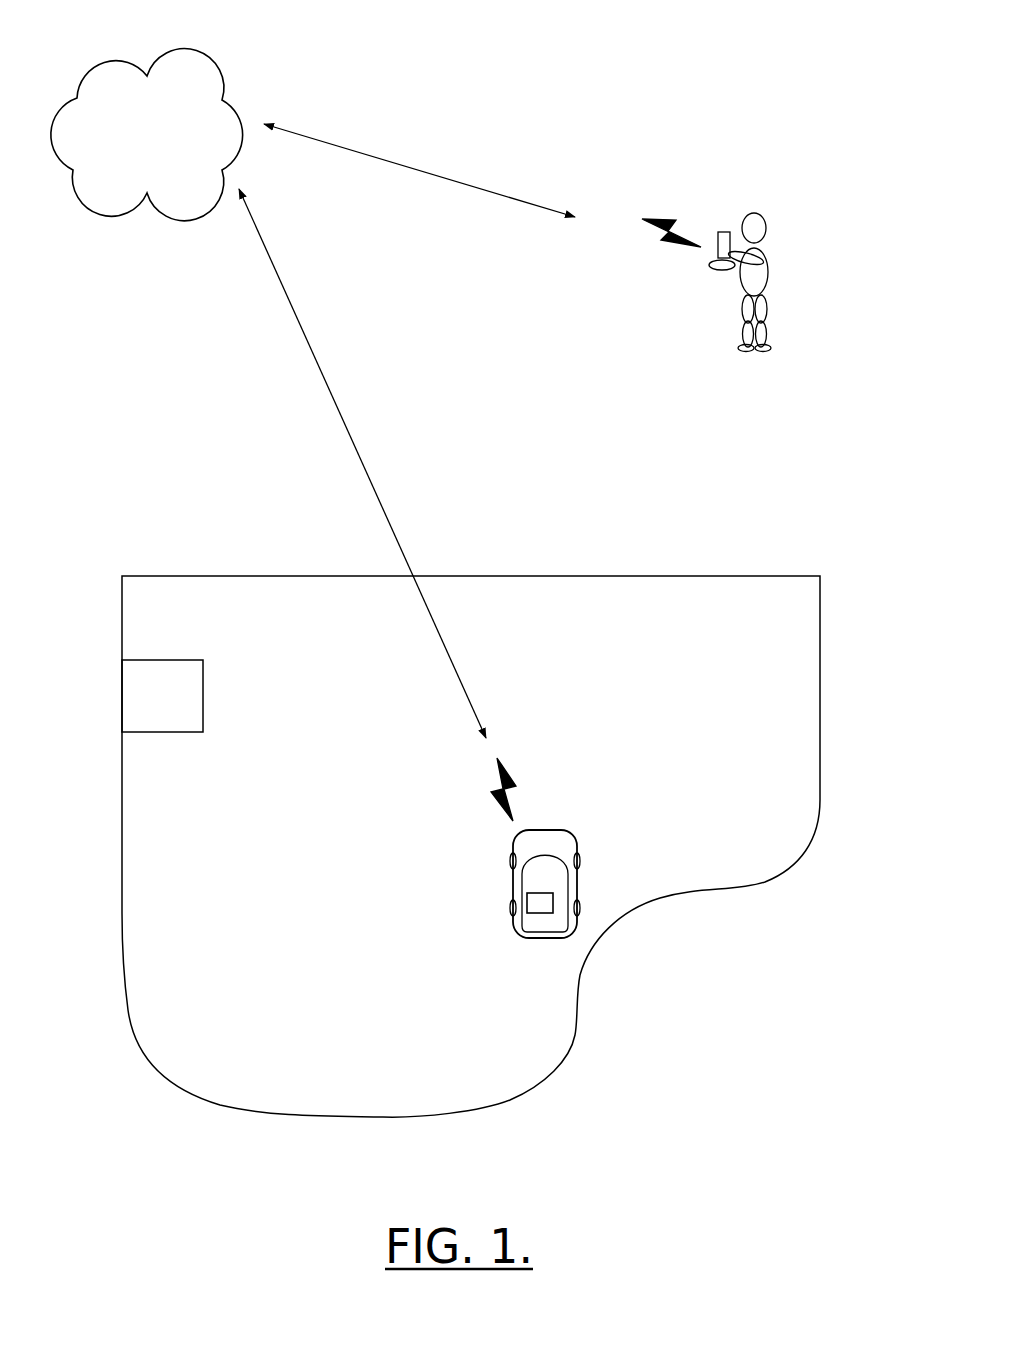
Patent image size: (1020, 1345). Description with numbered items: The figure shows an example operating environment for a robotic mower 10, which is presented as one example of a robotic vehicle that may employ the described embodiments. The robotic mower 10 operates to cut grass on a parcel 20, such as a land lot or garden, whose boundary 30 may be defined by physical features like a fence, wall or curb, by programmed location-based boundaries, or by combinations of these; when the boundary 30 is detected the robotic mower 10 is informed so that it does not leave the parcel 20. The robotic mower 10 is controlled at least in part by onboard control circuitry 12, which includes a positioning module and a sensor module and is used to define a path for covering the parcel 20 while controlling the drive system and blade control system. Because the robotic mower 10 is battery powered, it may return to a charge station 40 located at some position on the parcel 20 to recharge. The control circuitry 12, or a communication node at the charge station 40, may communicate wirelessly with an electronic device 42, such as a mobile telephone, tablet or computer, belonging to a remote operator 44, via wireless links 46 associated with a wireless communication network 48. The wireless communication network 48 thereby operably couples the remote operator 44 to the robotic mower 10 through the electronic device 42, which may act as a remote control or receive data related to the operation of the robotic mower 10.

The robotic mower 10 is at (577, 870).
The control circuitry 12 is at (546, 888).
The parcel 20 is at (344, 926).
The boundary 30 is at (577, 1025).
The charge station 40 is at (147, 692).
The electronic device 42 is at (726, 217).
The remote operator 44 is at (794, 217).
The wireless links 46 is at (310, 320).
The wireless communication network 48 is at (211, 72).